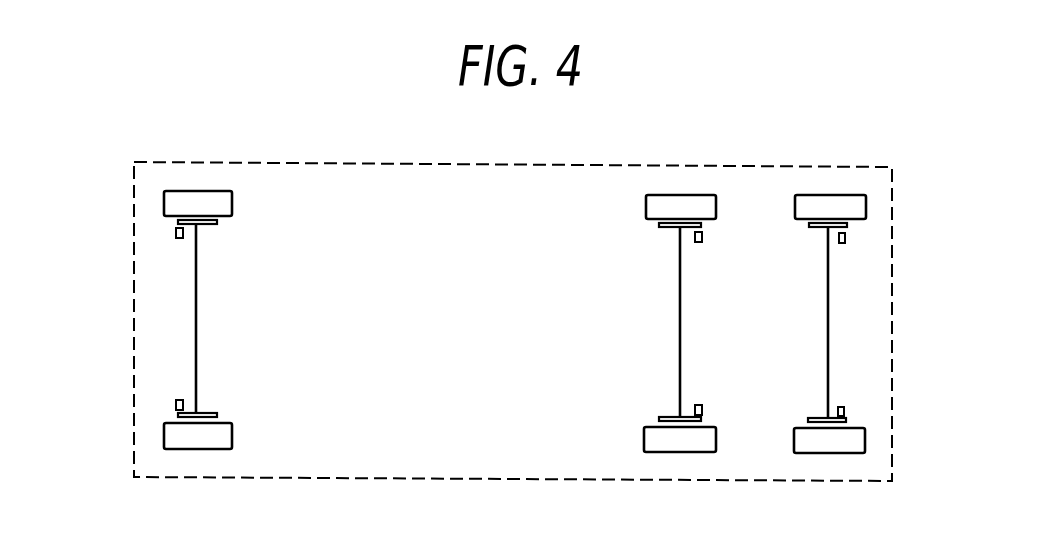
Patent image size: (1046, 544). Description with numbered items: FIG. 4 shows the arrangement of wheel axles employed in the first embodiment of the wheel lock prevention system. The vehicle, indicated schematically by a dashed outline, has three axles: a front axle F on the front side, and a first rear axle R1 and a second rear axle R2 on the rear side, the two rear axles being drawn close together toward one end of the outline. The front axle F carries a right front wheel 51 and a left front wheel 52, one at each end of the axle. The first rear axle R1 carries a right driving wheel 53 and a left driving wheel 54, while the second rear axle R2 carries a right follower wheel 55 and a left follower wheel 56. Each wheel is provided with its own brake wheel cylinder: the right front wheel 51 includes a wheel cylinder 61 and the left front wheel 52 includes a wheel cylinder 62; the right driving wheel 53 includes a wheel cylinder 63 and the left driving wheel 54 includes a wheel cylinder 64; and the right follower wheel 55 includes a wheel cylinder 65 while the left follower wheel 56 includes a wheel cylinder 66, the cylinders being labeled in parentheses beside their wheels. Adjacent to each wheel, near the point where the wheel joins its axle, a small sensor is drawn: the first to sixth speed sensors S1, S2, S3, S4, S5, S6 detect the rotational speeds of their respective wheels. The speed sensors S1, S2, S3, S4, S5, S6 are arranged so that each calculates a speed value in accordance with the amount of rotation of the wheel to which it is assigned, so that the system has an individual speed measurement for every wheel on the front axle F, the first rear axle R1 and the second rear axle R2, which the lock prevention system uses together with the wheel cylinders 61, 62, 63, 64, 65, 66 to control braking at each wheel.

The right front wheel 51 is at (194, 474).
The left front wheel 52 is at (207, 160).
The right driving wheel 53 is at (680, 479).
The left driving wheel 54 is at (682, 163).
The right follower wheel 55 is at (829, 479).
The left follower wheel 56 is at (832, 164).
The wheel cylinder 61 is at (183, 440).
The wheel cylinder 62 is at (201, 197).
The wheel cylinder 63 is at (675, 445).
The wheel cylinder 64 is at (675, 199).
The wheel cylinder 65 is at (820, 447).
The wheel cylinder 66 is at (830, 200).
The first speed sensor S1 is at (176, 404).
The second speed sensor S2 is at (176, 233).
The third speed sensor S3 is at (702, 408).
The fourth speed sensor S4 is at (702, 236).
The fifth speed sensor S5 is at (845, 410).
The sixth speed sensor S6 is at (846, 237).
The front axle F is at (197, 305).
The first rear axle R1 is at (679, 313).
The second rear axle R2 is at (828, 313).